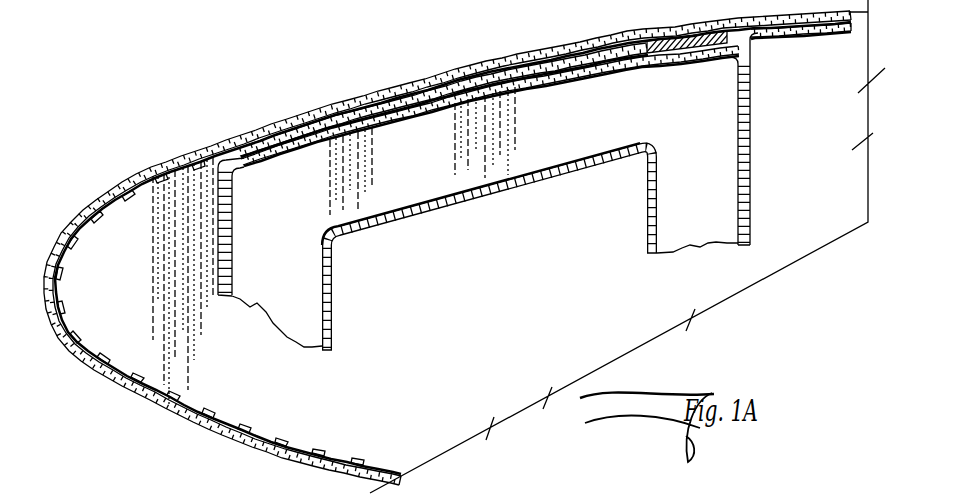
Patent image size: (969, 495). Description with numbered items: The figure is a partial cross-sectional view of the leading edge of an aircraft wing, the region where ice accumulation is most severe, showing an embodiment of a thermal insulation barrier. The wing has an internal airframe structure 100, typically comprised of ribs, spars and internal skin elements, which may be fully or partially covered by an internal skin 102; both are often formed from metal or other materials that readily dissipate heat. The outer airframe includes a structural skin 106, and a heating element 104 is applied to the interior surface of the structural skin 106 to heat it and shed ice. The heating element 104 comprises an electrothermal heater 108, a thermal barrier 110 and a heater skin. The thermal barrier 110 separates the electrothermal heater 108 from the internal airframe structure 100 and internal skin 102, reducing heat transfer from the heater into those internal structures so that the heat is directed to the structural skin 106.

The internal airframe structure 100 is at (557, 77).
The internal skin 102 is at (217, 250).
The heating element 104 is at (265, 401).
The structural skin 106 is at (273, 123).
The electrothermal heater 108 is at (177, 393).
The thermal barrier 110 is at (328, 112).